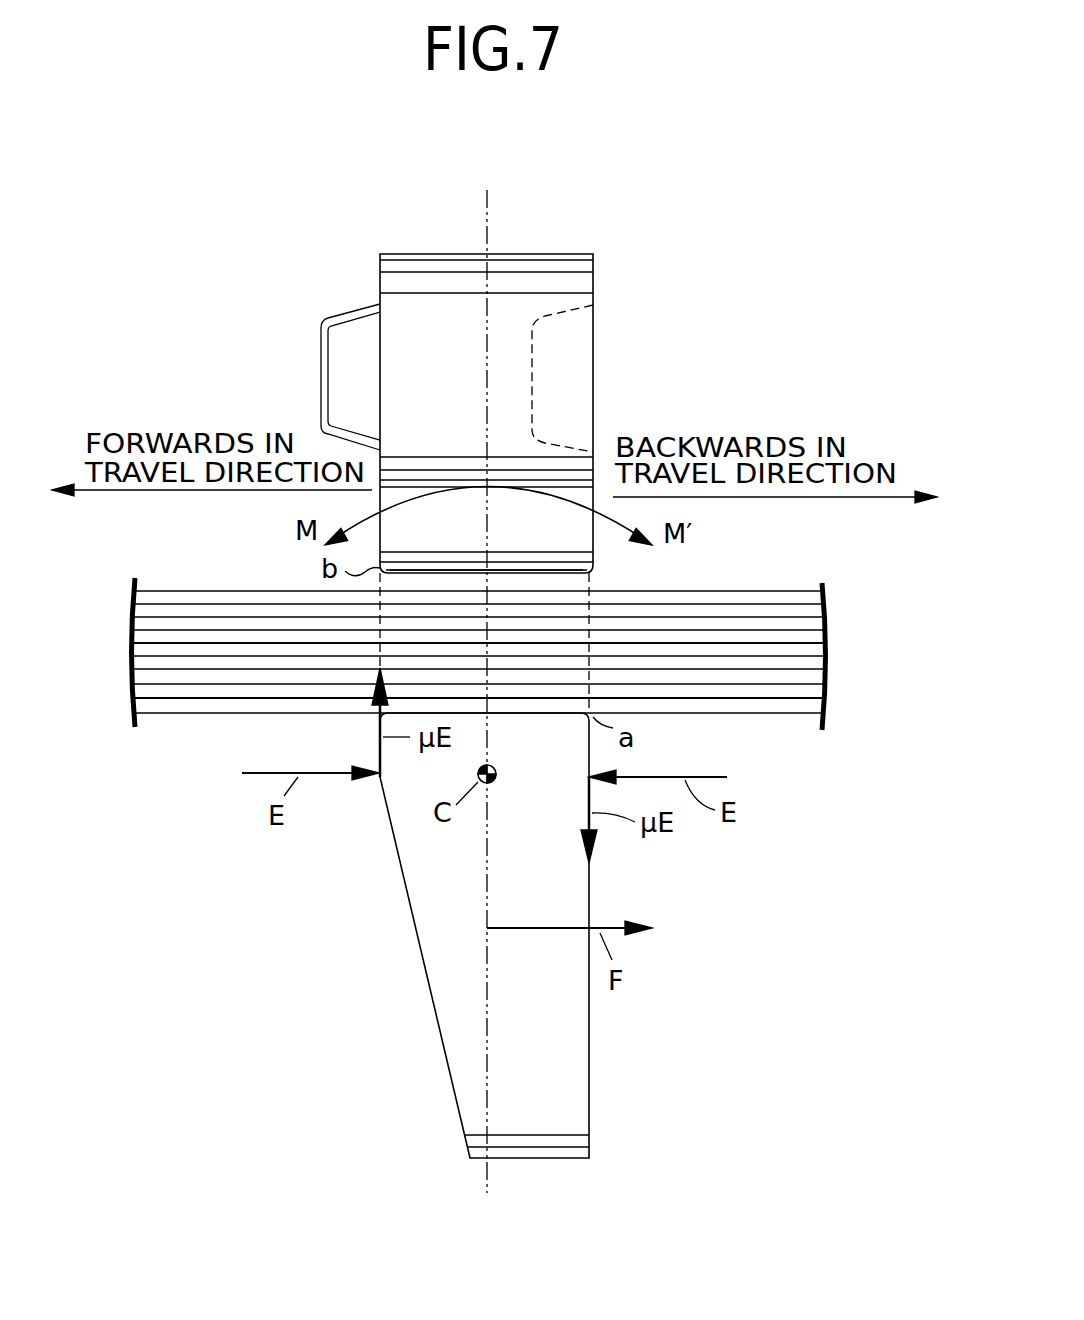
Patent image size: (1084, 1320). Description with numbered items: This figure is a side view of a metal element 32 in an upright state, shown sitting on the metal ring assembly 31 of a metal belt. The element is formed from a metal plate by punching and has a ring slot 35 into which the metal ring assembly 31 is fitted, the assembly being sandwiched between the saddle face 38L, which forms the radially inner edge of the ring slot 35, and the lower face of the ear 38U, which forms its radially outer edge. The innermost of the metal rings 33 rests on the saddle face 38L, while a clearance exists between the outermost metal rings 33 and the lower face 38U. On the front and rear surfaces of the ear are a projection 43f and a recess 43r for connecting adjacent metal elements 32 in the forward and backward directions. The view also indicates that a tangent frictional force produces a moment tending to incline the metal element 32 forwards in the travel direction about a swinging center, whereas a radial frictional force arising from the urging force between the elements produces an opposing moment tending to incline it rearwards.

The metal ring assembly 31 is at (519, 633).
The metal element 32 is at (605, 365).
The metal ring 33 is at (807, 625).
The ring slot 35 is at (543, 585).
The lower face of the ear 38U is at (448, 556).
The saddle face 38L is at (513, 712).
The projection 43f is at (347, 387).
The recess 43r is at (557, 441).